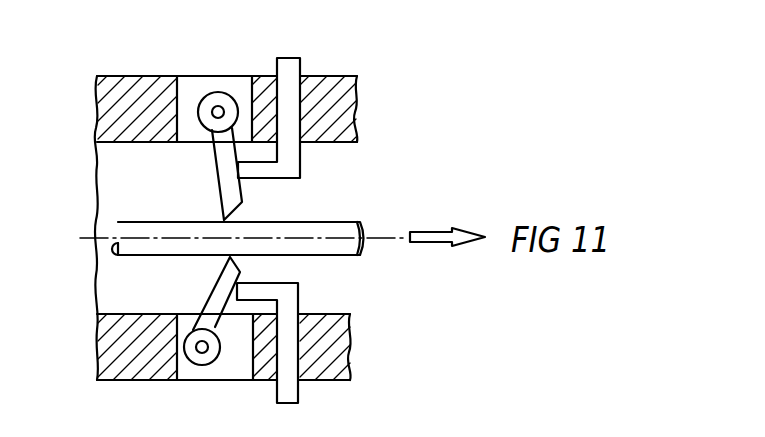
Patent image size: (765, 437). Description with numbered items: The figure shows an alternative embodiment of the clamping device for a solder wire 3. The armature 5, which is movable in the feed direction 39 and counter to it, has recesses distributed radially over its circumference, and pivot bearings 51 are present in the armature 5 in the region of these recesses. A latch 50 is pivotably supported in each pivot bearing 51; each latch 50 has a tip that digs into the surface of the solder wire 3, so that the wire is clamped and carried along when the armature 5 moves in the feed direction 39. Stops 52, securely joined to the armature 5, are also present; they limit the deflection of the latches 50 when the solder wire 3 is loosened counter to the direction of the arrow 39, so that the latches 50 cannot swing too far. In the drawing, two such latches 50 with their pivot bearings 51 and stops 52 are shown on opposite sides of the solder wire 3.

The solder wire 3 is at (333, 232).
The armature 5 is at (142, 338).
The feed direction 39 is at (433, 243).
The latch 50 is at (232, 133).
The pivot bearing 51 is at (216, 108).
The stop 52 is at (287, 170).